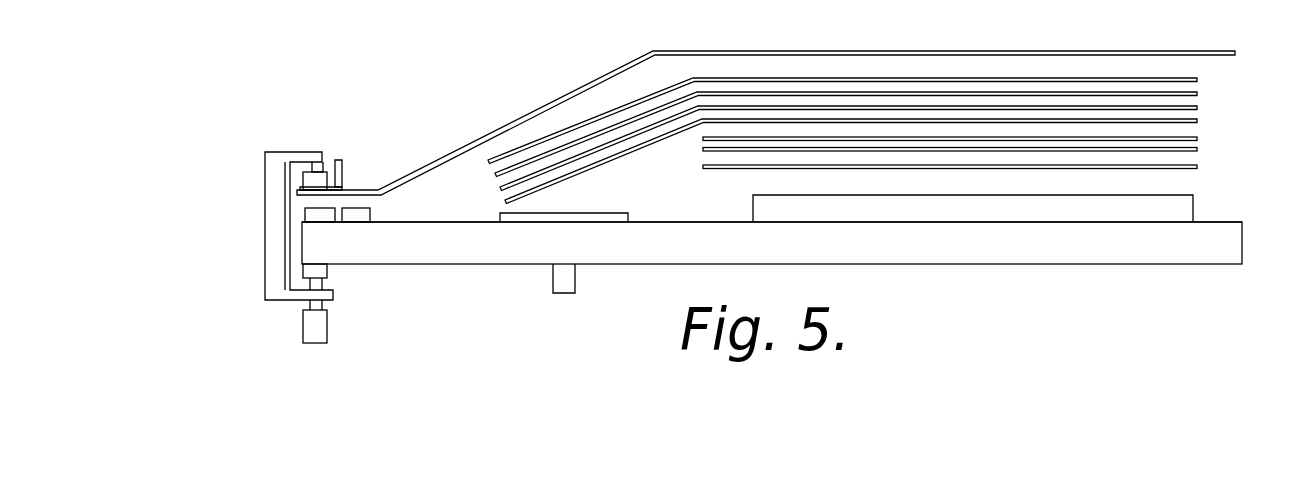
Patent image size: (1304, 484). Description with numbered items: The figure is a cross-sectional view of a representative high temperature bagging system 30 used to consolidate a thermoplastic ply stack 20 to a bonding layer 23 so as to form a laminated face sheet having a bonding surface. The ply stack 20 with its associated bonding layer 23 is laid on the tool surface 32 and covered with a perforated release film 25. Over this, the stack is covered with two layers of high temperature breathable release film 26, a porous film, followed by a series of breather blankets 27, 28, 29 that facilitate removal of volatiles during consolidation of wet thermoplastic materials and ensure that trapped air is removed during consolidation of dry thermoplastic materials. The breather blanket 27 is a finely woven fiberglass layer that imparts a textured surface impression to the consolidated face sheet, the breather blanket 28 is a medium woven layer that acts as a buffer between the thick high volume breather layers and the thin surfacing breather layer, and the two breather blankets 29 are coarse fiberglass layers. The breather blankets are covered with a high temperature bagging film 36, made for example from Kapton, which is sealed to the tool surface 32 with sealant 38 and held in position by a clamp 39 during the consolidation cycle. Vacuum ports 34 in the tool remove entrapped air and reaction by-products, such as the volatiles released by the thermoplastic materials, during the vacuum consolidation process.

The thermoplastic ply stack 20 is at (1200, 218).
The bonding layer 23 is at (1194, 198).
The perforated release film 25 is at (1197, 167).
The high temperature breathable release film 26 is at (1202, 139).
The breather blanket 27 is at (1197, 108).
The breather blanket 28 is at (1197, 94).
The breather blankets 29 is at (1197, 80).
The high temperature bagging system 30 is at (483, 129).
The tool surface 32 is at (1060, 258).
The vacuum ports 34 is at (557, 275).
The high temperature bagging film 36 is at (1235, 52).
The sealant 38 is at (305, 210).
The clamp 39 is at (273, 283).